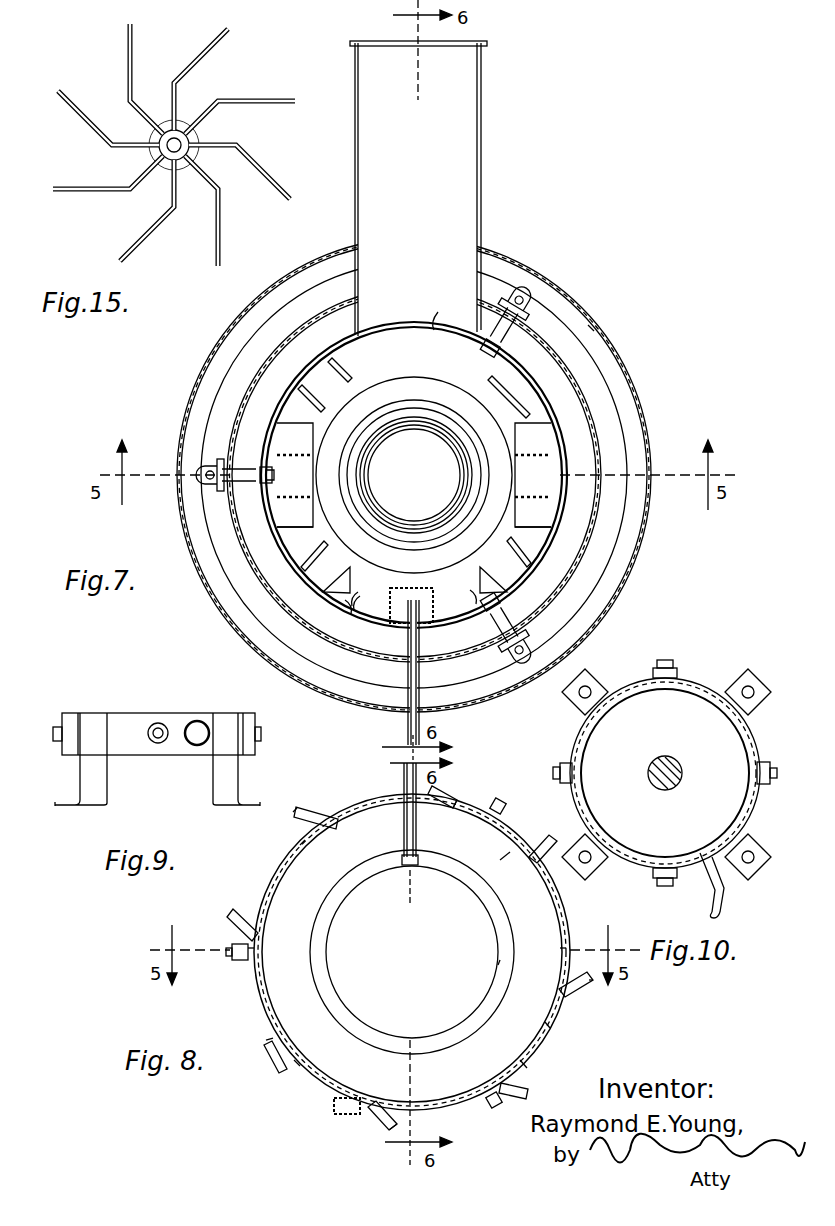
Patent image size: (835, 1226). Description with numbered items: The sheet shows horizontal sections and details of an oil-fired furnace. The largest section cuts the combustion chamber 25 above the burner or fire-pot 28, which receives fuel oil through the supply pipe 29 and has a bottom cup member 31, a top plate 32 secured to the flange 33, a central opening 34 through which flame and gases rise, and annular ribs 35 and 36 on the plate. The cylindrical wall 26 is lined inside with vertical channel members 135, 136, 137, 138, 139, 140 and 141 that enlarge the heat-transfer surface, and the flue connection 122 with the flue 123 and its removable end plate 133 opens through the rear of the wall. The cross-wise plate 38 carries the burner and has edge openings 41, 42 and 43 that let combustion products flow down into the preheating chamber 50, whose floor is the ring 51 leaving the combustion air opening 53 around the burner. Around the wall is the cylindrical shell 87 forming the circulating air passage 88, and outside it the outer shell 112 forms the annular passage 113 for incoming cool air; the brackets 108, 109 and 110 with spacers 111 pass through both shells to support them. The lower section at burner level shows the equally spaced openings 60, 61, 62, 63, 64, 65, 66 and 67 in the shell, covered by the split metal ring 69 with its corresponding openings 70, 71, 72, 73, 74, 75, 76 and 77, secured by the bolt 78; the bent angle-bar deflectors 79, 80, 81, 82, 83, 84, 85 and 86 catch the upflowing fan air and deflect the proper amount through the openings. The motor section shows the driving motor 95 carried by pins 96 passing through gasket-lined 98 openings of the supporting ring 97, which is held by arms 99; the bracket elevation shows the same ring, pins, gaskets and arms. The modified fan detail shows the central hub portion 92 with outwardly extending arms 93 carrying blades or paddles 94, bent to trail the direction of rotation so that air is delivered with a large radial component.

In FIG. 7, the combustion chamber 25 is at (535, 412).
In FIG. 7, the cylindrical wall 26 is at (565, 443).
In FIG. 8, the cylindrical wall 26 is at (548, 1027).
In FIG. 7, the burner or fire-pot 28 is at (397, 413).
In FIG. 8, the burner or fire-pot 28 is at (322, 986).
In FIG. 7, the supply pipe 29 is at (407, 726).
In FIG. 8, the supply pipe 29 is at (403, 778).
In FIG. 8, the bottom cup member 31 is at (412, 952).
In FIG. 7, the top plate 32 is at (432, 412).
In FIG. 8, the flange 33 is at (462, 878).
In FIG. 7, the central opening 34 is at (381, 507).
In FIG. 7, the annular rib 35 is at (452, 412).
In FIG. 7, the annular rib 36 is at (407, 420).
In FIG. 7, the cross-wise extending plate 38 is at (545, 545).
In FIG. 7, the edge opening 41 is at (372, 620).
In FIG. 7, the edge opening 42 is at (278, 505).
In FIG. 7, the edge opening 43 is at (574, 510).
In FIG. 7, the preheating chamber 50 is at (365, 560).
In FIG. 8, the ring 51 is at (519, 979).
In FIG. 8, the combustion air opening 53 is at (560, 908).
In FIG. 8, the opening 60 is at (252, 948).
In FIG. 8, the opening 61 is at (304, 850).
In FIG. 8, the opening 62 is at (404, 818).
In FIG. 8, the opening 63 is at (513, 848).
In FIG. 8, the opening 64 is at (558, 950).
In FIG. 8, the opening 65 is at (522, 1062).
In FIG. 8, the opening 66 is at (413, 1100).
In FIG. 8, the opening 67 is at (302, 1062).
In FIG. 7, the split metal ring 69 is at (540, 385).
In FIG. 8, the split metal ring 69 is at (268, 884).
In FIG. 8, the opening 70 is at (248, 962).
In FIG. 8, the opening 71 is at (292, 832).
In FIG. 8, the opening 72 is at (449, 785).
In FIG. 8, the opening 73 is at (512, 838).
In FIG. 8, the opening 74 is at (570, 975).
In FIG. 8, the opening 75 is at (520, 1080).
In FIG. 8, the opening 76 is at (371, 1126).
In FIG. 8, the opening 77 is at (288, 1070).
In FIG. 8, the bolt 78 is at (342, 1115).
In FIG. 8, the deflector 79 is at (232, 918).
In FIG. 8, the deflector 80 is at (318, 810).
In FIG. 8, the deflector 81 is at (456, 795).
In FIG. 8, the deflector 82 is at (553, 840).
In FIG. 8, the deflector 83 is at (592, 985).
In FIG. 8, the deflector 84 is at (503, 1099).
In FIG. 8, the deflector 85 is at (384, 1132).
In FIG. 8, the deflector 86 is at (266, 1046).
In FIG. 7, the cylindrical shell 87 is at (575, 580).
In FIG. 7, the circulating air passage 88 is at (545, 600).
In FIG. 15, the central hub portion 92 is at (156, 155).
In FIG. 15, the outwardly extending arm 93 is at (150, 147).
In FIG. 15, the blade or paddle 94 is at (125, 18).
In FIG. 10, the driving motor 95 is at (652, 765).
In FIG. 9, the pin 96 is at (160, 726).
In FIG. 10, the pin 96 is at (668, 663).
In FIG. 9, the supporting ring 97 is at (124, 730).
In FIG. 10, the supporting ring 97 is at (577, 730).
In FIG. 9, the gasket 98 is at (54, 745).
In FIG. 10, the gasket 98 is at (680, 672).
In FIG. 9, the arm 99 is at (210, 800).
In FIG. 10, the arm 99 is at (565, 703).
In FIG. 7, the bracket 108 is at (205, 488).
In FIG. 7, the bracket 109 is at (530, 297).
In FIG. 7, the bracket 110 is at (562, 650).
In FIG. 7, the spacer 111 is at (506, 340).
In FIG. 7, the outer shell 112 is at (594, 330).
In FIG. 7, the annular passage 113 is at (258, 609).
In FIG. 7, the flue connection or opening 122 is at (429, 314).
In FIG. 7, the flue 123 is at (482, 216).
In FIG. 7, the removable end plate 133 is at (470, 41).
In FIG. 7, the vertical channel member 135 is at (508, 397).
In FIG. 7, the vertical channel member 136 is at (538, 467).
In FIG. 7, the vertical channel member 137 is at (500, 570).
In FIG. 7, the vertical channel member 138 is at (434, 596).
In FIG. 7, the vertical channel member 139 is at (329, 573).
In FIG. 7, the vertical channel member 140 is at (292, 465).
In FIG. 7, the vertical channel member 141 is at (325, 385).